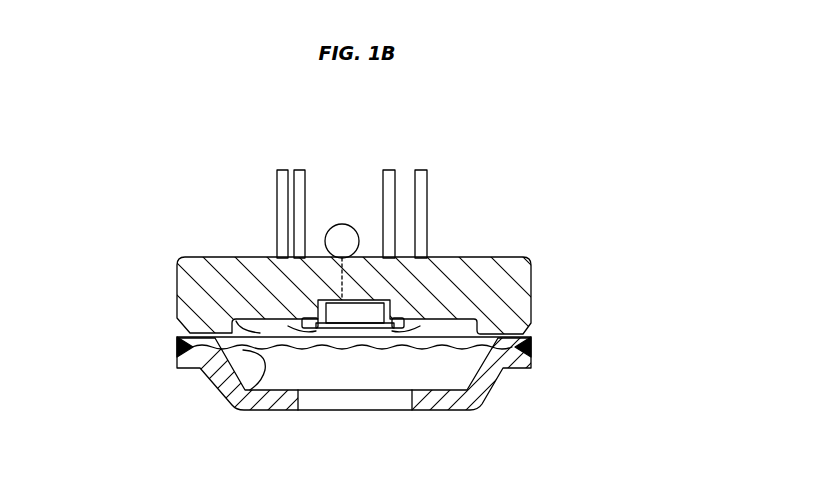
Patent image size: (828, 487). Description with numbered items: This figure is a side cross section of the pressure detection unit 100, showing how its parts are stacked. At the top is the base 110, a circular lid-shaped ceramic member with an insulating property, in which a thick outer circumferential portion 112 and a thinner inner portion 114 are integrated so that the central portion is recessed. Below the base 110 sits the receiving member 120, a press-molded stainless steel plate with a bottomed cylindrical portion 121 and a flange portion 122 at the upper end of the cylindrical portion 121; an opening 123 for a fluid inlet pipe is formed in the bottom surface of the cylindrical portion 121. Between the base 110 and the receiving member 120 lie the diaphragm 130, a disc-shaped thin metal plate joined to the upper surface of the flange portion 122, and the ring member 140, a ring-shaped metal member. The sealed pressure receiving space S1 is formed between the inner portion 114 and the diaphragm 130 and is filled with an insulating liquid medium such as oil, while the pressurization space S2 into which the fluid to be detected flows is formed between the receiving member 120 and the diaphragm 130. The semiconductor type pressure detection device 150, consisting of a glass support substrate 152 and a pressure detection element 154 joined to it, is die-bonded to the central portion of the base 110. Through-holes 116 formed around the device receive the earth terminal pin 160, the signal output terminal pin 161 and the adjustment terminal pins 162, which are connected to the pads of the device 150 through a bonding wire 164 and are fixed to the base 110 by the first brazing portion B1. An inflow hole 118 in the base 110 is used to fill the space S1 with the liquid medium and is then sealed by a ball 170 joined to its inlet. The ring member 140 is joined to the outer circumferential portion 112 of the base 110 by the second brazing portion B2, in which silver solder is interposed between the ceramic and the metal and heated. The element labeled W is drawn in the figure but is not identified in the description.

The pressure detection unit 100 is at (567, 180).
The base 110 is at (208, 270).
The outer circumferential portion 112 is at (522, 296).
The inner portion 114 is at (215, 320).
The through-holes 116 is at (262, 318).
The inflow hole 118 is at (437, 262).
The receiving member 120 is at (476, 396).
The cylindrical portion 121 is at (265, 398).
The flange portion 122 is at (508, 368).
The opening 123 is at (406, 398).
The diaphragm 130 is at (235, 390).
The ring member 140 is at (232, 333).
The semiconductor type pressure detection device 150 is at (357, 333).
The support substrate 152 is at (388, 303).
The pressure detection element 154 is at (375, 332).
The earth terminal pin 160 is at (280, 198).
The signal output terminal pin 161 is at (301, 172).
The adjustment terminal pins 162 is at (421, 168).
The bonding wire 164 is at (290, 340).
The ball 170 is at (342, 237).
The first brazing portion B1 is at (261, 260).
The second brazing portion B2 is at (485, 320).
The pressure receiving space S1 is at (465, 283).
The pressurization space S2 is at (448, 385).
The workpiece / wafer W is at (534, 347).